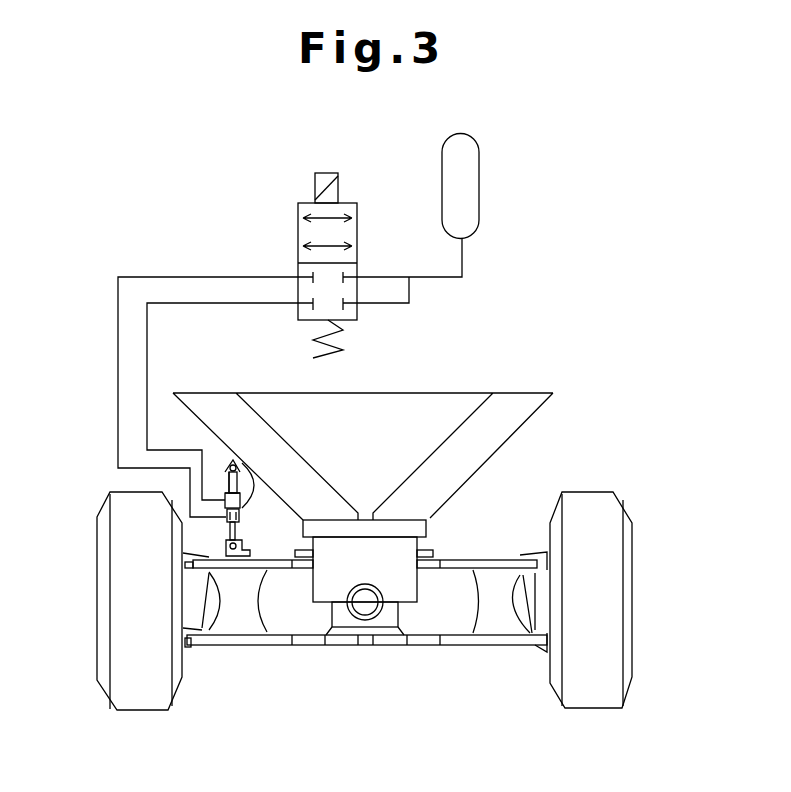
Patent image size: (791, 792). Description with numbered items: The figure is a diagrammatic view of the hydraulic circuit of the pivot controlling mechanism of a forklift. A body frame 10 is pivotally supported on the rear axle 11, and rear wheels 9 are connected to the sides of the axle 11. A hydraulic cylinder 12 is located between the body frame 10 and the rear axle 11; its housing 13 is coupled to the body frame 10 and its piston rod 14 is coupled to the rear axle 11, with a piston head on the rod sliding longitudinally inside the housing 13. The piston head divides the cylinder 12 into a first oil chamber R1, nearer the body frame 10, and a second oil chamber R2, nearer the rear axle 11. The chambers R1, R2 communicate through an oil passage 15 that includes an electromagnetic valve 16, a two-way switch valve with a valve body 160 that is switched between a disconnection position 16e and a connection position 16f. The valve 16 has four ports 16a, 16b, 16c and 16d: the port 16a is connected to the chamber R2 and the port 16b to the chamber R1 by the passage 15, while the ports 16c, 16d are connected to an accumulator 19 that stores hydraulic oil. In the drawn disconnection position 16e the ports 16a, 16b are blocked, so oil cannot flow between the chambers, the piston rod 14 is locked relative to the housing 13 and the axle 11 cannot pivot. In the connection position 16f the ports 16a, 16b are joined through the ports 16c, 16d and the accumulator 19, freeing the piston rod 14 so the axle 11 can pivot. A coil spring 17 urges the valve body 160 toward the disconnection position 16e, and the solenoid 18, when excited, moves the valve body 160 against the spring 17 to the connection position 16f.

The rear wheels 9 is at (157, 707).
The body frame 10 is at (513, 390).
The rear axle 11 is at (467, 645).
The hydraulic cylinder 12 is at (240, 498).
The housing 13 is at (223, 496).
The piston rod 14 is at (237, 530).
The oil passage 15 is at (147, 365).
The electromagnetic valve 16 is at (347, 227).
The valve body 160 is at (298, 203).
The port 16a is at (298, 276).
The port 16b is at (298, 306).
The port 16c is at (357, 271).
The port 16d is at (357, 306).
The disconnection position 16e is at (357, 292).
The connection position 16f is at (357, 230).
The coil spring 17 is at (340, 367).
The solenoid 18 is at (340, 178).
The accumulator 19 is at (479, 187).
The first oil chamber R1 is at (244, 482).
The second oil chamber R2 is at (242, 515).